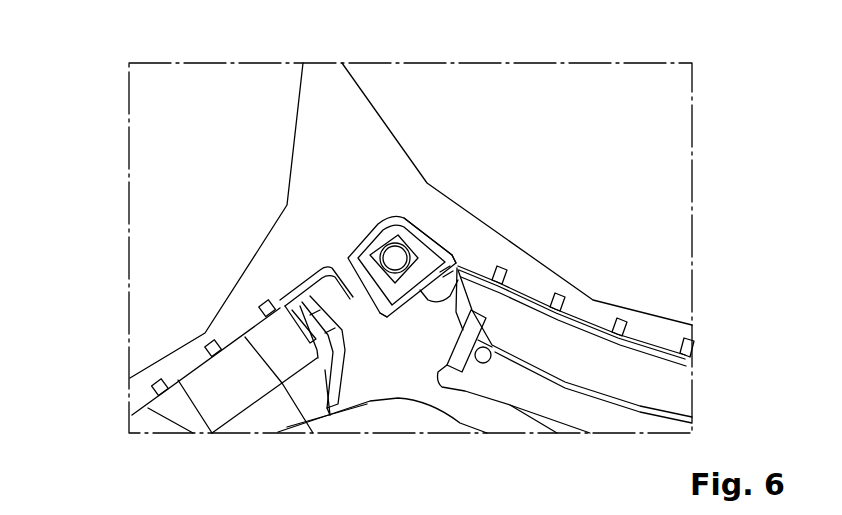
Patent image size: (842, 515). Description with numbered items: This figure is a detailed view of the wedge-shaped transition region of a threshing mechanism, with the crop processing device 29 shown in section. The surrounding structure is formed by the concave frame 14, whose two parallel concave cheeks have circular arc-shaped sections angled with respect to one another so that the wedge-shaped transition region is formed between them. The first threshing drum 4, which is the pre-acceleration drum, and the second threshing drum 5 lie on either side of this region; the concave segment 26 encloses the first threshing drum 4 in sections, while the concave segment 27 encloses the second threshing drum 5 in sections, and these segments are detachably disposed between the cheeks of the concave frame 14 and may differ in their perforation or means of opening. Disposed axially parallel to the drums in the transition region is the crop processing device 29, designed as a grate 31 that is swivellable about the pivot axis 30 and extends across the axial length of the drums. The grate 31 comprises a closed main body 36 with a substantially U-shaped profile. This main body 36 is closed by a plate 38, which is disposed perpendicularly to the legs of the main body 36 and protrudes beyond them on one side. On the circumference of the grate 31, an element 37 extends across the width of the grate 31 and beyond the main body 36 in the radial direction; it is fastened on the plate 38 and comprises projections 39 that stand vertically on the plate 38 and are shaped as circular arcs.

The first threshing drum 4 is at (173, 173).
The second threshing drum 5 is at (670, 232).
The concave frame 14 is at (398, 400).
The concave segment 26 is at (157, 395).
The concave segment 27 is at (693, 362).
The crop processing device 29 is at (398, 217).
The grate 31 is at (398, 217).
The pivot axis 30 is at (390, 262).
The main body 36 is at (433, 225).
The element 37 is at (455, 260).
The plate 38 is at (392, 310).
The projections 39 is at (435, 300).